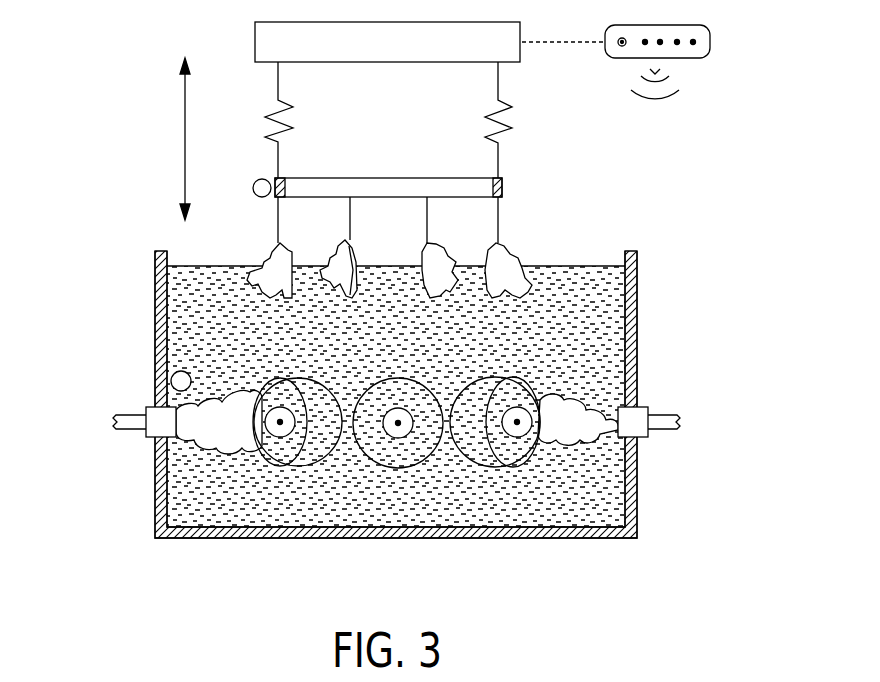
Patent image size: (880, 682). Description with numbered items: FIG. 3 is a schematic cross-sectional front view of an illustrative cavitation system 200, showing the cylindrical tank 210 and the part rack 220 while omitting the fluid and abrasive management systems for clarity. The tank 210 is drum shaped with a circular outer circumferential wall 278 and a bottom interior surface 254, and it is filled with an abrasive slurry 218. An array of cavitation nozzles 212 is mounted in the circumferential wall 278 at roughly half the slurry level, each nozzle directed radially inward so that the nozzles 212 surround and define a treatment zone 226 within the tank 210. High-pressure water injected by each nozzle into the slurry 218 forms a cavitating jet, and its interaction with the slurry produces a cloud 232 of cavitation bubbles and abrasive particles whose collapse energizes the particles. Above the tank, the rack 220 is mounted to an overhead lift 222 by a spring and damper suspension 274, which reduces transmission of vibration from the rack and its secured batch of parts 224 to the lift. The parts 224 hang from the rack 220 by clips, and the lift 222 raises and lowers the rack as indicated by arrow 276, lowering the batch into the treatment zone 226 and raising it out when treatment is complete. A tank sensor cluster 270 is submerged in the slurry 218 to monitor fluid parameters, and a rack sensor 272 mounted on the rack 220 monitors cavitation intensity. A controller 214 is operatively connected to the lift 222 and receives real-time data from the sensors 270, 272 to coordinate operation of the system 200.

The cavitation system 200 is at (113, 97).
The cylindrical tank 210 is at (630, 278).
The cavitation nozzles 212 is at (636, 415).
The controller 214 is at (712, 42).
The abrasive slurry 218 is at (600, 270).
The part rack 220 is at (503, 186).
The overhead lift 222 is at (522, 26).
The batch of parts 224 is at (506, 276).
The treatment zone 226 is at (349, 468).
The cavitation bubble cloud 232 is at (575, 443).
The bottom interior surface 254 is at (186, 523).
The tank sensor cluster 270 is at (171, 376).
The rack sensor 272 is at (255, 182).
The spring and damper suspension 274 is at (515, 125).
The arrow 276 is at (183, 163).
The circular outer circumferential wall 278 is at (632, 310).